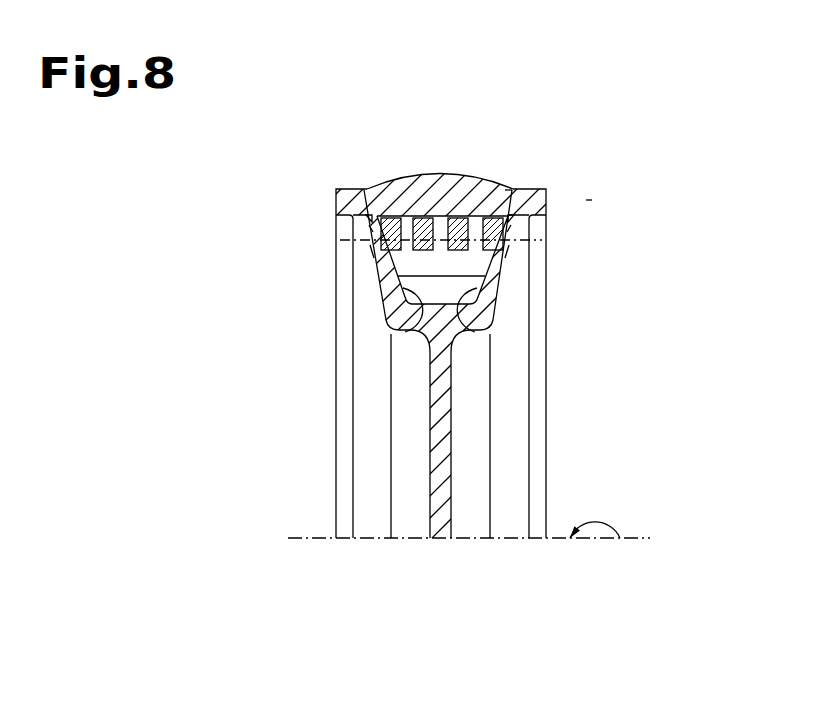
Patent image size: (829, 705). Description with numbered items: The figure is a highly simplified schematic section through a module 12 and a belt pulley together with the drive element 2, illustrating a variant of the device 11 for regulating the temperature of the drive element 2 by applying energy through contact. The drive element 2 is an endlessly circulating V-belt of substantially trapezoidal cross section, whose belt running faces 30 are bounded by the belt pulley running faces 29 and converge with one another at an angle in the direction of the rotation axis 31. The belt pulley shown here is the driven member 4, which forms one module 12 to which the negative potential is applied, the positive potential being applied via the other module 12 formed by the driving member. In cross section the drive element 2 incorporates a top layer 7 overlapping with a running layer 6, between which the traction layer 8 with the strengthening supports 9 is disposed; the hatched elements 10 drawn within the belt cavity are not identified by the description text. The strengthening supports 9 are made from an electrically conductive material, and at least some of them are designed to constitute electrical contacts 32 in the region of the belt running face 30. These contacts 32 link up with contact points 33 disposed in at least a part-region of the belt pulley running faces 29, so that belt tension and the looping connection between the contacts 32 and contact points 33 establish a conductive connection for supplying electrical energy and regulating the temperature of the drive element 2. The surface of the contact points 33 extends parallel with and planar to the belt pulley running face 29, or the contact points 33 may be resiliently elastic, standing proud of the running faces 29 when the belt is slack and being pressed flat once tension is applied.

The drive element 2 is at (496, 167).
The driven member 4 is at (338, 176).
The running layer 6 is at (505, 188).
The top layer 7 is at (417, 177).
The traction layer 8 is at (398, 262).
The strengthening supports 9 is at (483, 262).
The transducer elements 10 is at (388, 205).
The device 11 is at (590, 198).
The module 12 is at (339, 507).
The belt pulley running faces 29 is at (391, 340).
The belt running faces 30 is at (366, 220).
The rotation axis 31 is at (620, 538).
The electrical contacts 32 is at (370, 232).
The contact points 33 is at (372, 252).